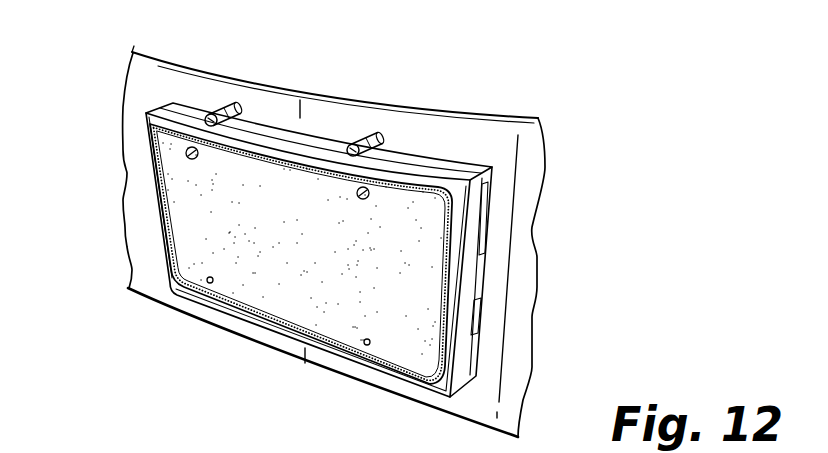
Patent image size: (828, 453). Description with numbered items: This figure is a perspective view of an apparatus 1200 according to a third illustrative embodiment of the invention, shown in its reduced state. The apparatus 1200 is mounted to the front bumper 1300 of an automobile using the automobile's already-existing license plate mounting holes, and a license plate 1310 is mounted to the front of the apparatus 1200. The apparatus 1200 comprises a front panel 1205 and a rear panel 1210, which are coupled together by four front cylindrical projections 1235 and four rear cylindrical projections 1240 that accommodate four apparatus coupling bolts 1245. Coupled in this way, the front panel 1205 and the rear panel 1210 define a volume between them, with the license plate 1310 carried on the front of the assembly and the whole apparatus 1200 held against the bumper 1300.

The apparatus 1200 is at (286, 233).
The front panel 1205 is at (443, 390).
The rear panel 1210 is at (474, 172).
The front cylindrical projections 1235 is at (213, 113).
The rear cylindrical projections 1240 is at (241, 108).
The apparatus coupling bolts 1245 is at (346, 146).
The front bumper 1300 is at (143, 275).
The license plate 1310 is at (277, 263).